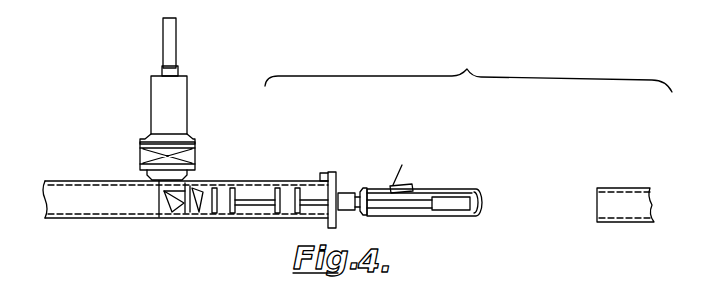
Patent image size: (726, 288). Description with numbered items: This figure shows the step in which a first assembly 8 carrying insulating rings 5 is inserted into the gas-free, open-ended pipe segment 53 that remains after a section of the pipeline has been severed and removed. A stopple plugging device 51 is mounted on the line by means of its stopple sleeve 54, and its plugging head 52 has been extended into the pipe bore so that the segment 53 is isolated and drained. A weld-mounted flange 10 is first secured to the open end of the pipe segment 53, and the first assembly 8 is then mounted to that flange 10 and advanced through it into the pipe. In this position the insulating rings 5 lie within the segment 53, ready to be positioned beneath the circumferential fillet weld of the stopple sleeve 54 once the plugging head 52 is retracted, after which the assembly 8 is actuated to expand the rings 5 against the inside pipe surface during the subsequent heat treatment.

The insulating ring 5 is at (284, 212).
The first assembly 8 is at (365, 184).
The weld-mounted flange 10 is at (327, 177).
The stopple plugging device 51 is at (187, 108).
The plugging head 52 is at (168, 208).
The open-ended pipe segment 53 is at (257, 182).
The stopple sleeve 54 is at (193, 181).